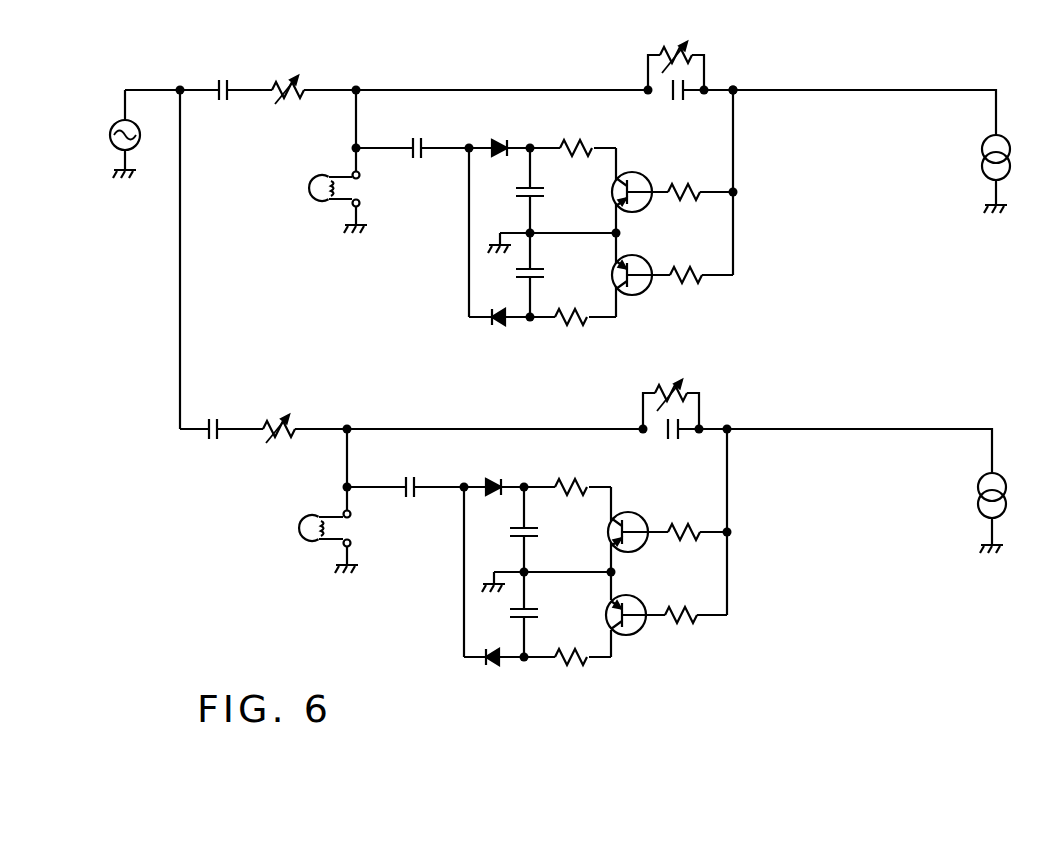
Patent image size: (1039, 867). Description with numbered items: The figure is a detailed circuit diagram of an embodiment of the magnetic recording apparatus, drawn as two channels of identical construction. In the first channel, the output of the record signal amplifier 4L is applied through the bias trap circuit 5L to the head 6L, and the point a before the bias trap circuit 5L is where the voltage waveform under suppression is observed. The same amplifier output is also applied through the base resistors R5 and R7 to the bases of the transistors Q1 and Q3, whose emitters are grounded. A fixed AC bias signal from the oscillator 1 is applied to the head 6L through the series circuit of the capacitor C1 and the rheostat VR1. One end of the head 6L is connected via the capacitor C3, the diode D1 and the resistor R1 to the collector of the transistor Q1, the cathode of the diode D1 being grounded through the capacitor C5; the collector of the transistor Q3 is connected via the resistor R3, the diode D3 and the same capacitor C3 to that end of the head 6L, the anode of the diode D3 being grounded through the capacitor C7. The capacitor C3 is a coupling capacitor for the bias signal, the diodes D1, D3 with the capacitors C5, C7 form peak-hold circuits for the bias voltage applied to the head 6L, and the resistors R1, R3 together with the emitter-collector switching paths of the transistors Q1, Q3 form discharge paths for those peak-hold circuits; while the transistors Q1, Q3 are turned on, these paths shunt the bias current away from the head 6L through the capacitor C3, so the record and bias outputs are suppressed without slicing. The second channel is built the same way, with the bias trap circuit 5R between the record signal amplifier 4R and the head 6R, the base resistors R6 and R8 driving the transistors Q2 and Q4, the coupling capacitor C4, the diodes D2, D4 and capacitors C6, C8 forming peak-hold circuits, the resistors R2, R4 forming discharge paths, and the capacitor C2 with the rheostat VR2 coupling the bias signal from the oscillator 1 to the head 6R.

The oscillator 1 is at (140, 143).
The capacitor C1 is at (223, 80).
The rheostat VR1 is at (290, 78).
The head 6L is at (318, 175).
The capacitor C3 is at (417, 138).
The diode D1 is at (500, 138).
The resistor R1 is at (577, 138).
The capacitor C5 is at (545, 192).
The capacitor C7 is at (545, 273).
The diode D3 is at (496, 328).
The resistor R3 is at (575, 328).
The transistor Q1 is at (646, 206).
The resistor R5 is at (686, 183).
The transistor Q3 is at (640, 296).
The resistor R7 is at (690, 288).
The bias trap circuit 5L is at (652, 76).
The point a is at (738, 84).
The record signal amplifier 4L is at (982, 153).
The capacitor C2 is at (213, 418).
The rheostat VR2 is at (283, 418).
The head 6R is at (308, 515).
The capacitor C4 is at (410, 478).
The diode D2 is at (493, 478).
The resistor R2 is at (572, 478).
The capacitor C6 is at (539, 532).
The capacitor C8 is at (539, 613).
The diode D4 is at (492, 668).
The resistor R4 is at (575, 668).
The transistor Q2 is at (642, 546).
The resistor R6 is at (683, 523).
The transistor Q4 is at (636, 636).
The resistor R8 is at (686, 628).
The bias trap circuit 5R is at (648, 416).
The record signal amplifier 4R is at (977, 497).